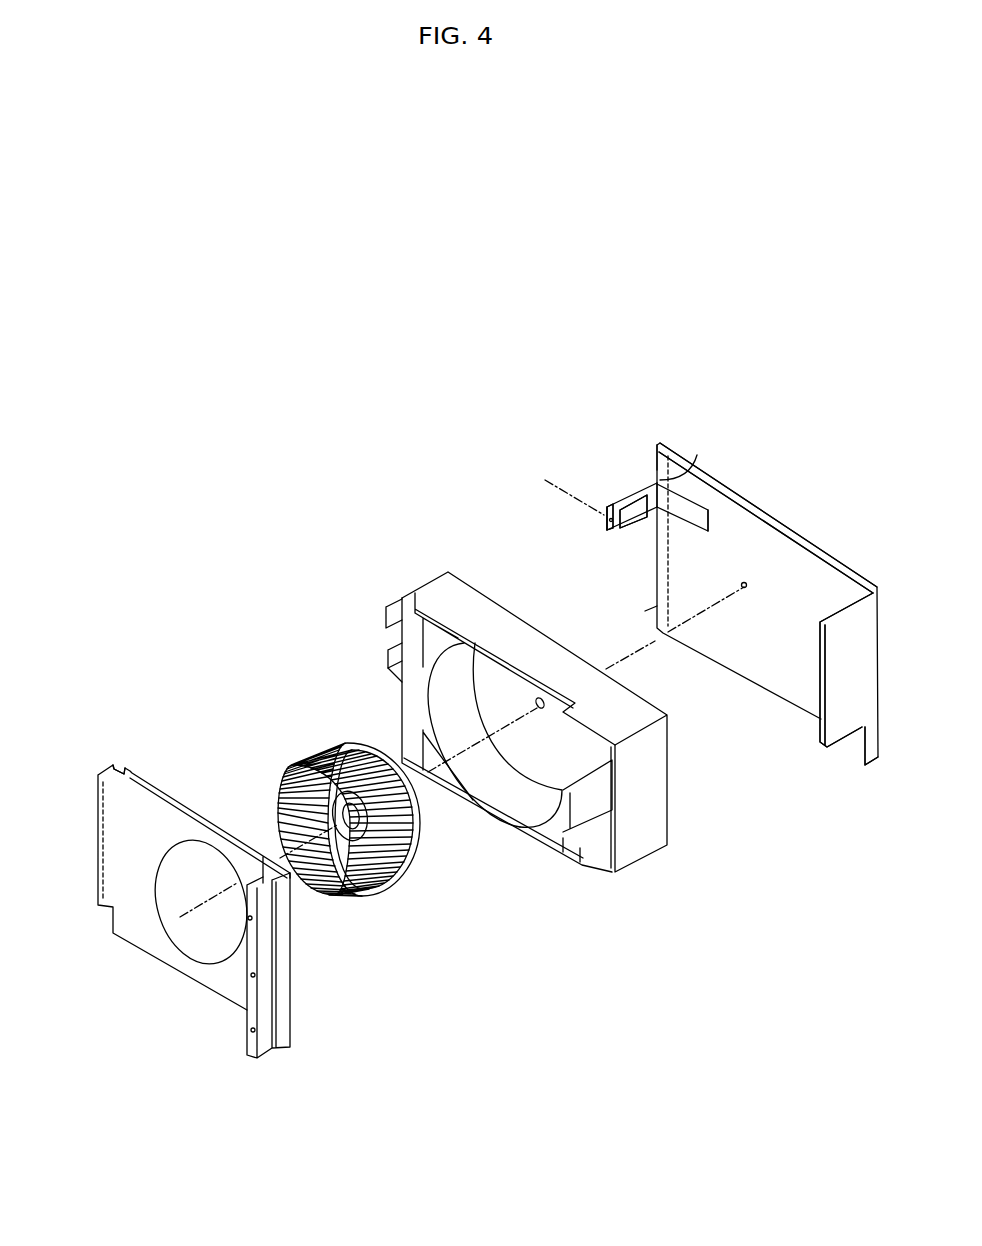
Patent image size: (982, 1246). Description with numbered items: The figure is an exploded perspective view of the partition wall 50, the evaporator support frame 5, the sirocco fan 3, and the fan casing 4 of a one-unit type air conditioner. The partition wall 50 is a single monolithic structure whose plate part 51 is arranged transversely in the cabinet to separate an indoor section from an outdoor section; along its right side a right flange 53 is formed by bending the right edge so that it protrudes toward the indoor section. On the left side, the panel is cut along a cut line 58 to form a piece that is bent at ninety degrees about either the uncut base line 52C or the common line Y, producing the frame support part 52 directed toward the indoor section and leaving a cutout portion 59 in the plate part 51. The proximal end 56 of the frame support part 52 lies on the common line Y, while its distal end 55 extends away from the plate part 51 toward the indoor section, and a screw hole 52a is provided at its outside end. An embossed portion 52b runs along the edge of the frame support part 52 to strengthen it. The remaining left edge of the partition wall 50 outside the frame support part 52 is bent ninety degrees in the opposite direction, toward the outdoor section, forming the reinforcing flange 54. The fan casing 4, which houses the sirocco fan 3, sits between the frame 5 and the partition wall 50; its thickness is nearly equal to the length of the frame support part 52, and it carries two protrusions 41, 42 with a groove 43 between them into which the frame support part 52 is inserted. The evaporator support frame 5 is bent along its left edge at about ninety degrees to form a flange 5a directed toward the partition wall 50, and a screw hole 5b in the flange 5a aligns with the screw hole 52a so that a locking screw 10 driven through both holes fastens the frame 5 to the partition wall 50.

The sirocco fan 3 is at (403, 873).
The fan casing 4 is at (640, 840).
The protrusion 41 is at (387, 610).
The protrusion 42 is at (388, 673).
The groove 43 is at (392, 648).
The evaporator support frame 5 is at (167, 792).
The flange 5a is at (100, 775).
The screw hole 5b is at (98, 810).
The locking screw 10 is at (545, 480).
The partition wall 50 is at (703, 577).
The plate part 51 is at (783, 515).
The frame support part 52 is at (612, 503).
The screw hole 52a is at (607, 531).
The embossed portion 52b is at (636, 527).
The uncut base line 52C is at (667, 493).
The right flange 53 is at (837, 730).
The reinforcing flange 54 is at (672, 468).
The distal end 55 is at (607, 510).
The proximal end 56 is at (652, 483).
The cut line 58 is at (692, 500).
The cutout portion 59 is at (704, 527).
The common line Y is at (639, 612).